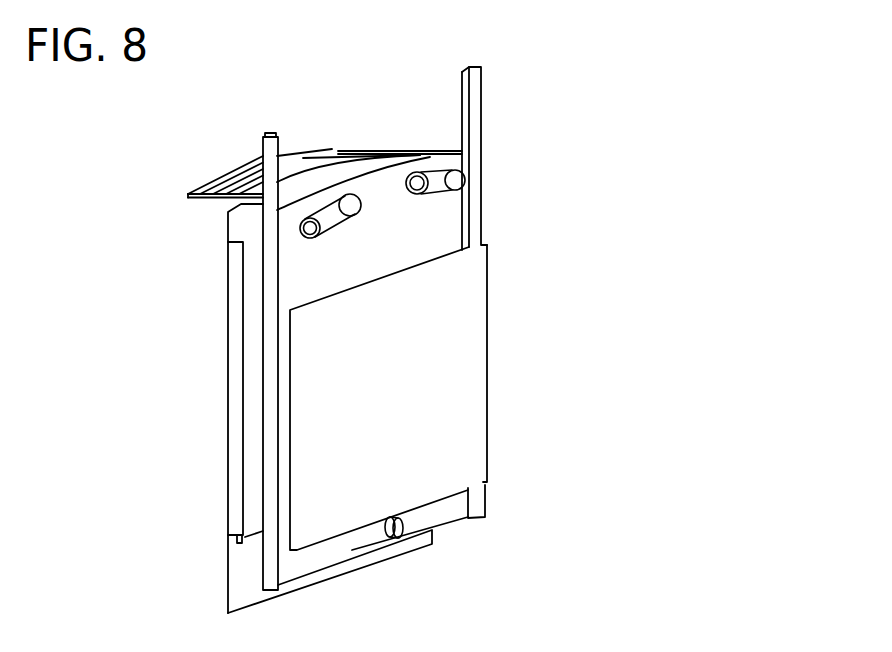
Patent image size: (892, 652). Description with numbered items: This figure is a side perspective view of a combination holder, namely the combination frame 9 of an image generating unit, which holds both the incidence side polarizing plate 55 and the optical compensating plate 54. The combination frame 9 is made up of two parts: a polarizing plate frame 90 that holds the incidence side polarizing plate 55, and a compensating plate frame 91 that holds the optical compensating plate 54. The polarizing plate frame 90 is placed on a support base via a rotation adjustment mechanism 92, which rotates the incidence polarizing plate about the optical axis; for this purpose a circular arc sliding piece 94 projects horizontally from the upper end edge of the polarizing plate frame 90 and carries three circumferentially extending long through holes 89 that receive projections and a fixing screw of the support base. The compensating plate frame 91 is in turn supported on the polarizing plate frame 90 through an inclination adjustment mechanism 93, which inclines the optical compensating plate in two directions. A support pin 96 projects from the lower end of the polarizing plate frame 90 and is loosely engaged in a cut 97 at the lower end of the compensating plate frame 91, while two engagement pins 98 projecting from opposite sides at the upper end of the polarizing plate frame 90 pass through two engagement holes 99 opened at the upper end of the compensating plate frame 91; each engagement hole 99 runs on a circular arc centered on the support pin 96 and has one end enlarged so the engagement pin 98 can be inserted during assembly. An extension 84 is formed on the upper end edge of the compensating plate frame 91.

The combination frame 9 is at (508, 123).
The compensating plate frame 91 is at (495, 213).
The inclination adjustment mechanism 93 is at (625, 165).
The extension 84 is at (350, 148).
The rotation adjustment mechanism 92 is at (187, 115).
The through holes 89 is at (212, 188).
The circular arc sliding piece 94 is at (193, 203).
The polarizing plate frame 90 is at (220, 380).
The incidence side polarizing plate 55 is at (250, 471).
The optical compensating plate 54 is at (470, 423).
The support pin 96 is at (405, 527).
The cut 97 is at (398, 540).
The engagement pins 98 is at (417, 173).
The engagement holes 99 is at (442, 190).